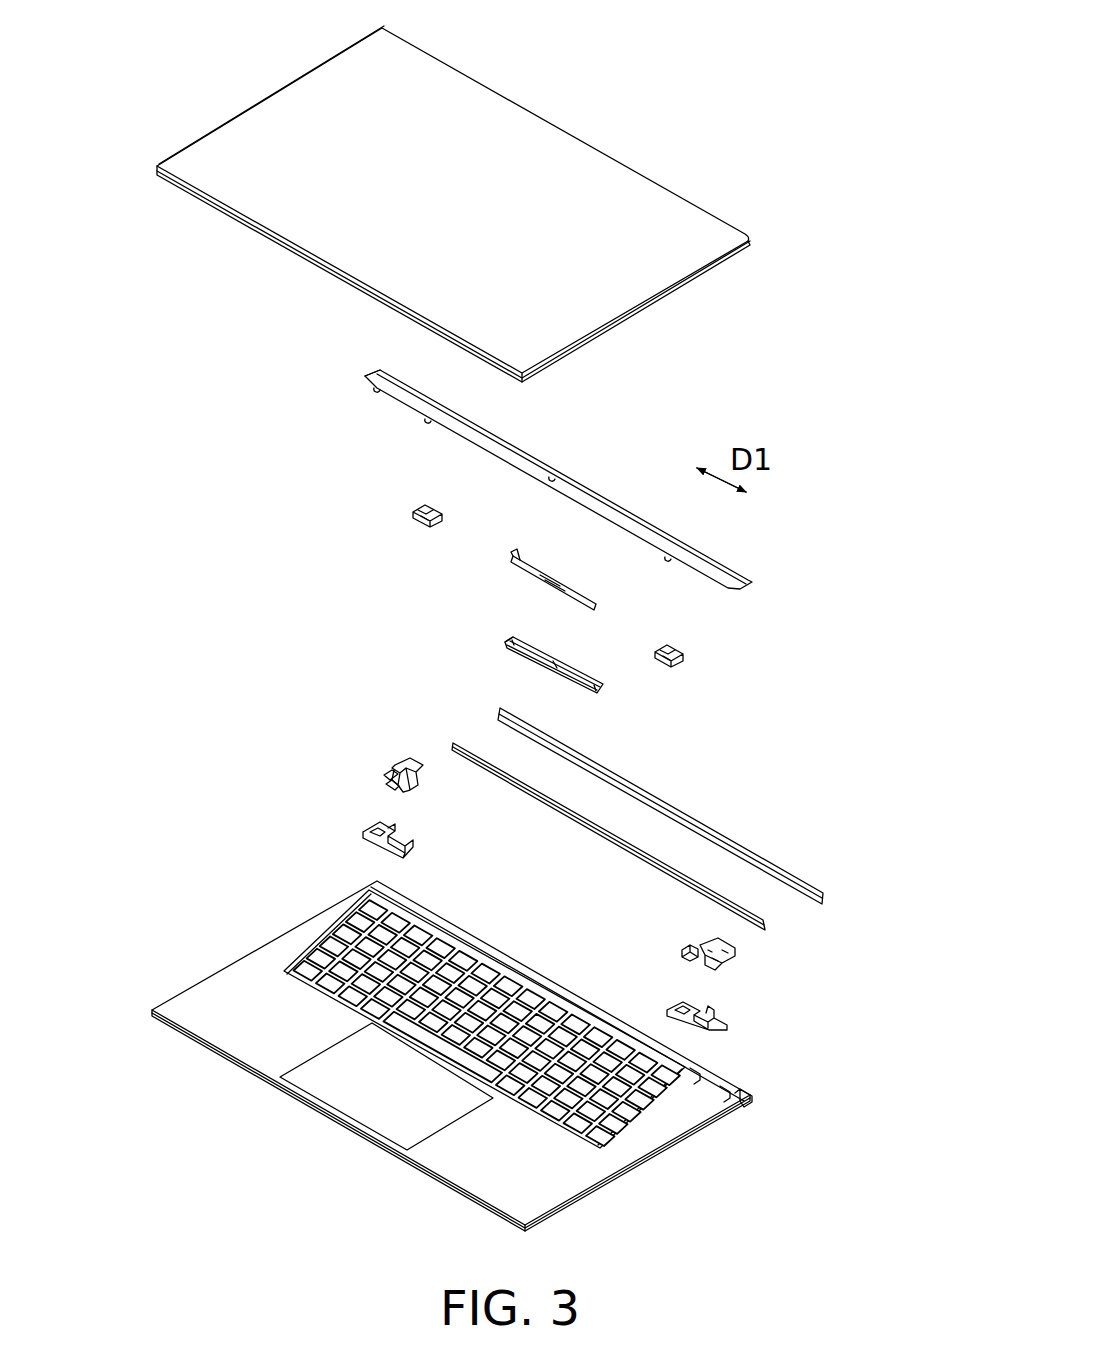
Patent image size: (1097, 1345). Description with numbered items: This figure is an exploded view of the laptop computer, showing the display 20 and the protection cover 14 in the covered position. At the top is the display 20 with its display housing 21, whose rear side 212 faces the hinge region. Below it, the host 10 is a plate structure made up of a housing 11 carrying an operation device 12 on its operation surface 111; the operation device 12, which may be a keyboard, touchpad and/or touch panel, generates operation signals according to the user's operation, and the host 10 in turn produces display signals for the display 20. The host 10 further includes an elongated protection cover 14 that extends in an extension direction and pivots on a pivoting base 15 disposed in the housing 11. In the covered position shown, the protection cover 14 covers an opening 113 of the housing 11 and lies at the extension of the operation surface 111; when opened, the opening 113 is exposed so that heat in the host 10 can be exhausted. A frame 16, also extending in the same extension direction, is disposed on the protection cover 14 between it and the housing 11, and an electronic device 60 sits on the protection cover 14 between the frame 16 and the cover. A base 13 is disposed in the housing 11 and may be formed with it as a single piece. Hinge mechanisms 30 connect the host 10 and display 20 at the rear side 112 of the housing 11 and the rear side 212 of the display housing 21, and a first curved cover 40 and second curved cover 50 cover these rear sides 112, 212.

The display 20 is at (208, 65).
The display housing 21 is at (330, 55).
The rear side of the display housing 212 is at (568, 135).
The protection cover 14 is at (708, 570).
The pivoting base 15 is at (413, 503).
The electronic device 60 is at (535, 568).
The frame 16 is at (510, 640).
The first curved cover 40 is at (823, 900).
The second curved cover 50 is at (767, 923).
The hinge mechanism 30 is at (380, 760).
The base 13 is at (370, 817).
The host 10 is at (262, 880).
The housing 11 is at (247, 947).
The operation surface 111 is at (205, 997).
The rear side of the housing 112 is at (750, 1095).
The opening 113 is at (700, 1090).
The operation device 12 is at (327, 992).